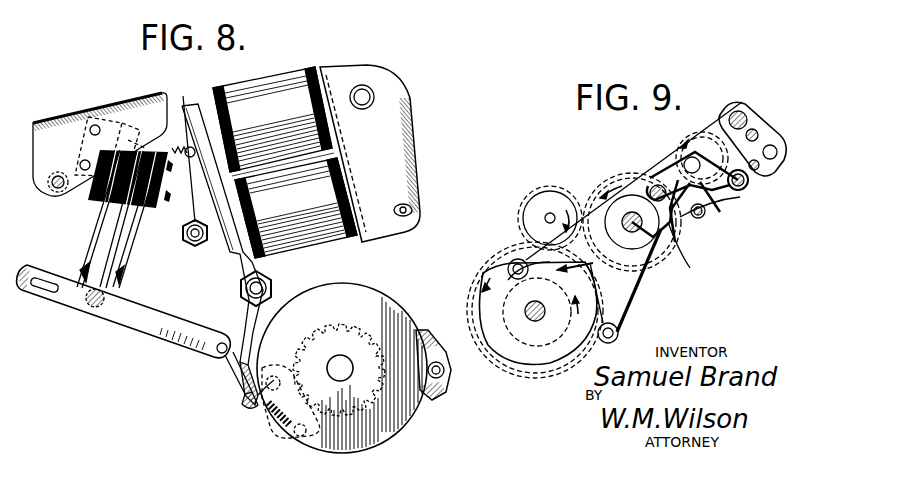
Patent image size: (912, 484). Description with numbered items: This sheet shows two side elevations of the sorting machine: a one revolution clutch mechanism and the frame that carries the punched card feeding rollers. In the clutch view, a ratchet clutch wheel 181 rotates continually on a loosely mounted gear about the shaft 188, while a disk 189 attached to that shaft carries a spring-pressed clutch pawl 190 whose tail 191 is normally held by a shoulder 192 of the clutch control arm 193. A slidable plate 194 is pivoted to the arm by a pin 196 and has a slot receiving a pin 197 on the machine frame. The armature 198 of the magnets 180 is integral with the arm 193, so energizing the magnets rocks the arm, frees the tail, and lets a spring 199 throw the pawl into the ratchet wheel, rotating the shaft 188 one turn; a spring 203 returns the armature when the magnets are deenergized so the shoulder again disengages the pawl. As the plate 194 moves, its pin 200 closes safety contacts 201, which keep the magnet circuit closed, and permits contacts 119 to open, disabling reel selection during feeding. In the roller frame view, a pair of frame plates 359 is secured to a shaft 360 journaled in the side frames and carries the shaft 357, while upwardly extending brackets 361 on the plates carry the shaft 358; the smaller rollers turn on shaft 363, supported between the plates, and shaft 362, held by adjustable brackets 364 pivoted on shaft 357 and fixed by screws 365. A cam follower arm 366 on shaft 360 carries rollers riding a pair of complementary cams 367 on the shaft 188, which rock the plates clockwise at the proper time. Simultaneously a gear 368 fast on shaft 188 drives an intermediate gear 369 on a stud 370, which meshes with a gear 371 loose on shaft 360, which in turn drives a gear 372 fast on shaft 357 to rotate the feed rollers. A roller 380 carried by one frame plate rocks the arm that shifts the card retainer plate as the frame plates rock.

In FIG. 8, the contacts 119 is at (122, 266).
In FIG. 8, the magnets 180 is at (283, 200).
In FIG. 8, the ratchet clutch wheel 181 is at (355, 330).
In FIG. 8, the shaft 188 is at (348, 375).
In FIG. 9, the shaft 188 is at (528, 318).
In FIG. 8, the disk 189 is at (314, 290).
In FIG. 8, the clutch pawl 190 is at (292, 440).
In FIG. 8, the tail 191 is at (247, 345).
In FIG. 8, the shoulder 192 is at (240, 399).
In FIG. 8, the clutch control arm 193 is at (228, 380).
In FIG. 8, the slidable plate 194 is at (137, 318).
In FIG. 8, the pin 196 is at (215, 354).
In FIG. 8, the pin 197 is at (42, 292).
In FIG. 8, the armature 198 is at (195, 205).
In FIG. 8, the spring 199 is at (278, 418).
In FIG. 8, the pin 200 is at (92, 312).
In FIG. 8, the safety contacts 201 is at (90, 256).
In FIG. 8, the spring 203 is at (177, 146).
In FIG. 9, the shaft 357 is at (684, 164).
In FIG. 9, the shaft 358 is at (740, 112).
In FIG. 9, the frame plates 359 is at (704, 240).
In FIG. 9, the shaft 360 is at (660, 264).
In FIG. 9, the brackets 361 is at (752, 118).
In FIG. 9, the shaft 362 is at (748, 180).
In FIG. 9, the shaft 363 is at (768, 170).
In FIG. 9, the adjustable brackets 364 is at (712, 196).
In FIG. 9, the screws 365 is at (677, 238).
In FIG. 9, the cam follower arm 366 is at (618, 305).
In FIG. 9, the cams 367 is at (558, 348).
In FIG. 9, the gear 368 is at (488, 265).
In FIG. 9, the intermediate gear 369 is at (520, 218).
In FIG. 9, the stud 370 is at (548, 216).
In FIG. 9, the gear 371 is at (588, 182).
In FIG. 9, the gear 372 is at (668, 140).
In FIG. 9, the roller 380 is at (700, 218).